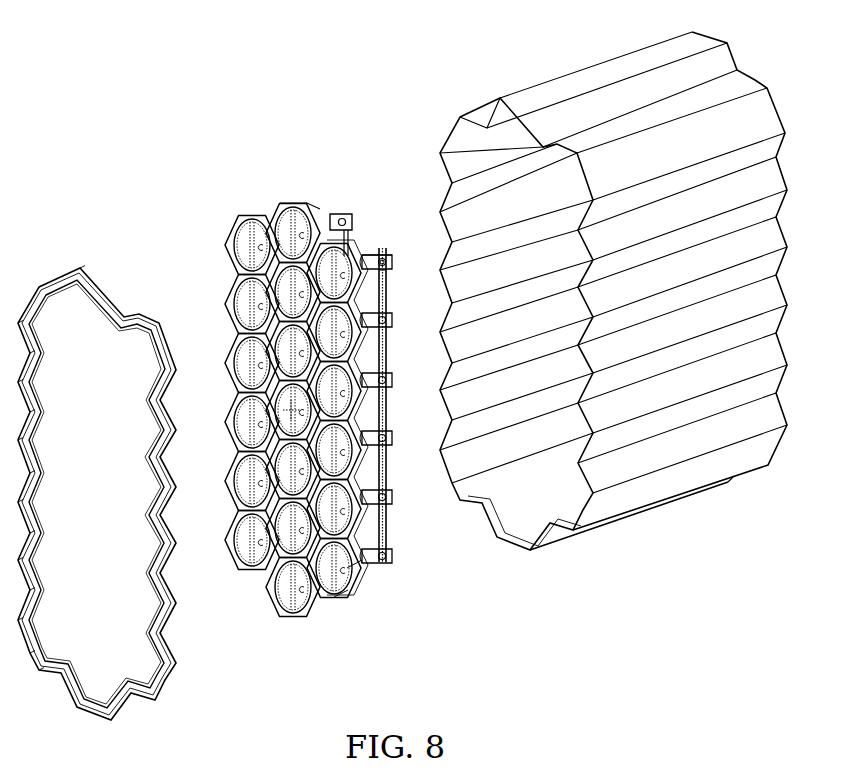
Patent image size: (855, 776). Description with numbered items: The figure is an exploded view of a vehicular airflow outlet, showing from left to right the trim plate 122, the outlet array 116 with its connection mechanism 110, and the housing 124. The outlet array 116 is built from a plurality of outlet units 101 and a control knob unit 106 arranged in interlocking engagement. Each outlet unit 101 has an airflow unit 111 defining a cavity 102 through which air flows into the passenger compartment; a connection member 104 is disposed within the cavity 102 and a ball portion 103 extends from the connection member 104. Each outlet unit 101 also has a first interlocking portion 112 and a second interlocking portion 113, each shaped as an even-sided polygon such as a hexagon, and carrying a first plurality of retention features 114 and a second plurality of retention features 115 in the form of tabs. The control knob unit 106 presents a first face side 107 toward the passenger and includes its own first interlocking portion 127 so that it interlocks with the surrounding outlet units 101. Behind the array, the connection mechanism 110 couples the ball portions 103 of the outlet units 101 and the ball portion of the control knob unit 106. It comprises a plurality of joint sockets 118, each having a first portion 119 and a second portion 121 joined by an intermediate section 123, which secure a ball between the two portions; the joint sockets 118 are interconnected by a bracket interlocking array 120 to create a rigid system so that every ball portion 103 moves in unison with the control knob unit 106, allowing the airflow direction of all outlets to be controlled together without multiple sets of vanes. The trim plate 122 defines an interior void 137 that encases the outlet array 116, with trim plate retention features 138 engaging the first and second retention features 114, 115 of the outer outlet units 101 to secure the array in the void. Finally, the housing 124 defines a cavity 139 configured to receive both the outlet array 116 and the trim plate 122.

The outlet unit 101 is at (256, 396).
The cavity 102 is at (268, 380).
The ball portion 103 is at (352, 216).
The connection member 104 is at (268, 222).
The control knob unit 106 is at (272, 410).
The first face side 107 is at (279, 413).
The connection mechanism 110 is at (396, 395).
The airflow unit 111 is at (235, 305).
The first interlocking portion 112 is at (272, 380).
The second interlocking portion 113 is at (315, 205).
The first plurality of retention features 114 is at (364, 562).
The second plurality of retention features 115 is at (358, 598).
The outlet array 116 is at (256, 396).
The joint socket 118 is at (392, 257).
The first portion 119 is at (390, 274).
The bracket interlocking array 120 is at (388, 354).
The second portion 121 is at (372, 256).
The trim plate 122 is at (87, 268).
The intermediate section 123 is at (389, 264).
The housing 124 is at (613, 291).
The first interlocking portion 127 is at (290, 418).
The interior void 137 is at (97, 493).
The trim plate retention features 138 is at (42, 378).
The cavity 139 is at (540, 200).